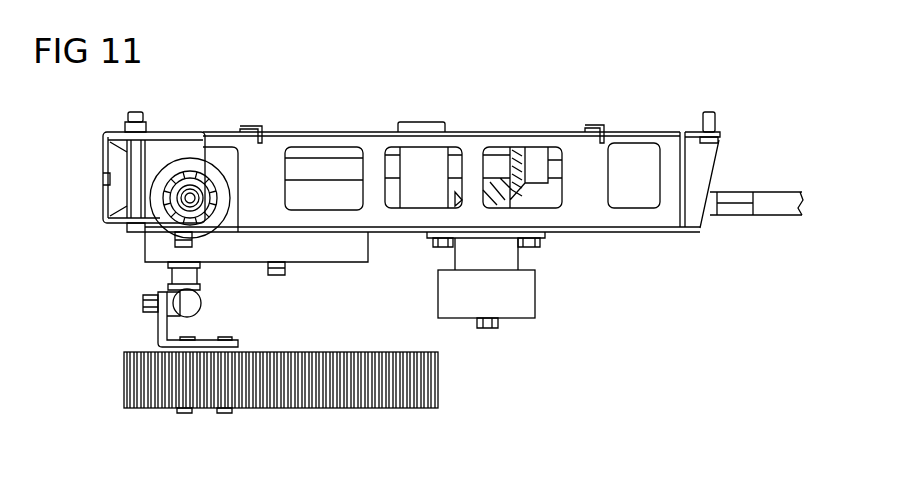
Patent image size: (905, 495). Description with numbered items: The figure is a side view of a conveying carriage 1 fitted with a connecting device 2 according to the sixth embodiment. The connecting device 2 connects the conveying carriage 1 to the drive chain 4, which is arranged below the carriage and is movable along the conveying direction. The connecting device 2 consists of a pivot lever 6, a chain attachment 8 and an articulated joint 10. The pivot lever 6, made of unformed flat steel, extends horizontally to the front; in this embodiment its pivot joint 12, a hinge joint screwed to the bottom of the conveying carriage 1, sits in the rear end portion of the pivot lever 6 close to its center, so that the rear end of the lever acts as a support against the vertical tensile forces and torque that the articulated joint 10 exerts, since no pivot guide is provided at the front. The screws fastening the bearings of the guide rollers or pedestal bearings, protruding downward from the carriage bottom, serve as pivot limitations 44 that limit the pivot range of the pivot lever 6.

The conveying carriage 1 is at (318, 98).
The connecting device 2 is at (125, 298).
The drive chain 4 is at (355, 402).
The pivot lever 6 is at (360, 262).
The chain attachment 8 is at (158, 338).
The articulated joint 10 is at (264, 285).
The pivot joint 12 is at (276, 276).
The pivot limitations 44 is at (172, 244).